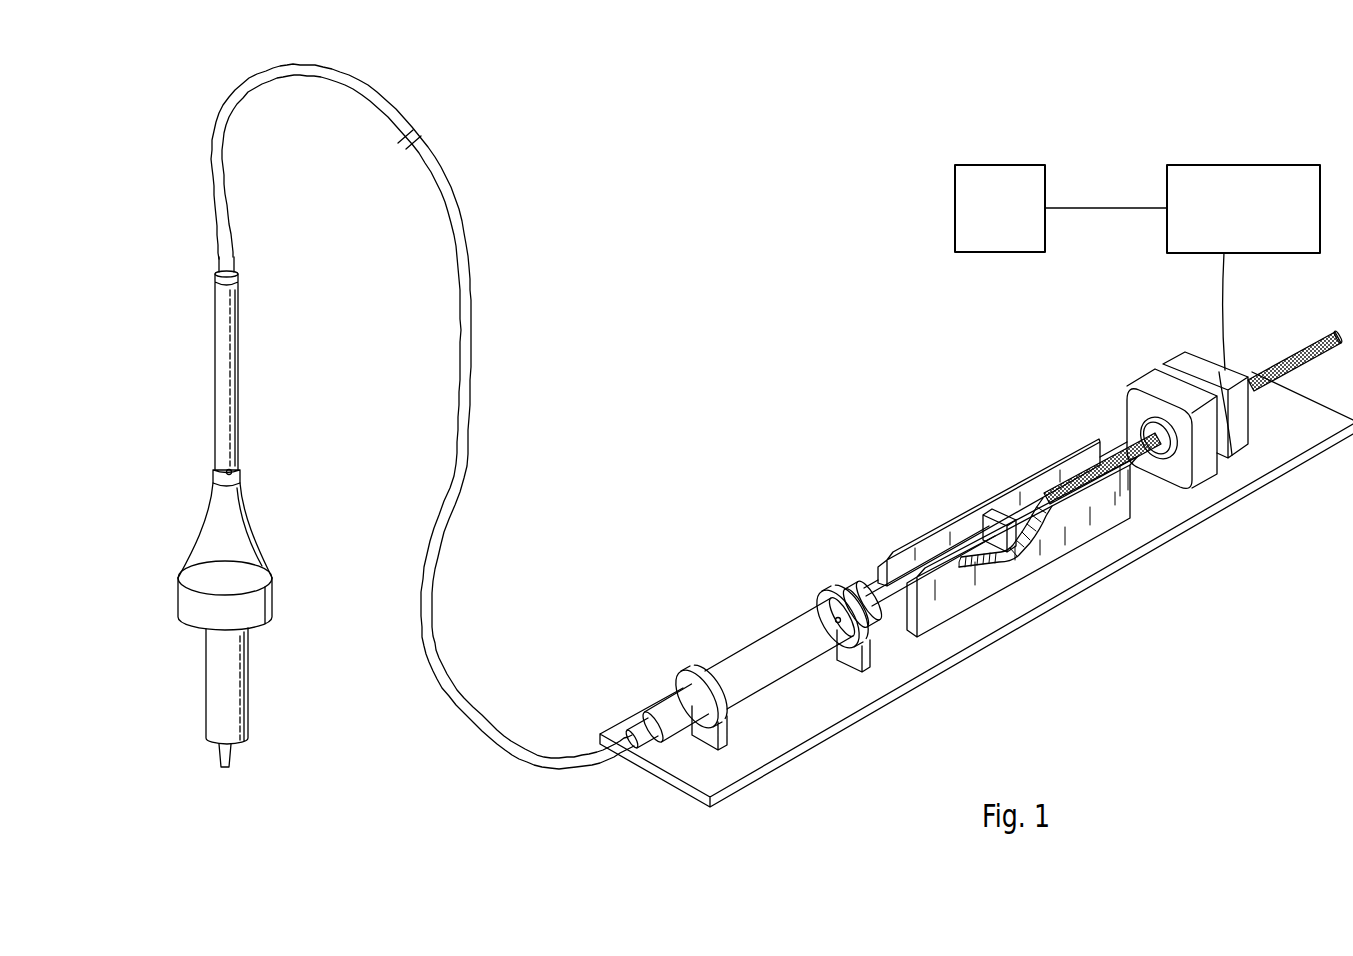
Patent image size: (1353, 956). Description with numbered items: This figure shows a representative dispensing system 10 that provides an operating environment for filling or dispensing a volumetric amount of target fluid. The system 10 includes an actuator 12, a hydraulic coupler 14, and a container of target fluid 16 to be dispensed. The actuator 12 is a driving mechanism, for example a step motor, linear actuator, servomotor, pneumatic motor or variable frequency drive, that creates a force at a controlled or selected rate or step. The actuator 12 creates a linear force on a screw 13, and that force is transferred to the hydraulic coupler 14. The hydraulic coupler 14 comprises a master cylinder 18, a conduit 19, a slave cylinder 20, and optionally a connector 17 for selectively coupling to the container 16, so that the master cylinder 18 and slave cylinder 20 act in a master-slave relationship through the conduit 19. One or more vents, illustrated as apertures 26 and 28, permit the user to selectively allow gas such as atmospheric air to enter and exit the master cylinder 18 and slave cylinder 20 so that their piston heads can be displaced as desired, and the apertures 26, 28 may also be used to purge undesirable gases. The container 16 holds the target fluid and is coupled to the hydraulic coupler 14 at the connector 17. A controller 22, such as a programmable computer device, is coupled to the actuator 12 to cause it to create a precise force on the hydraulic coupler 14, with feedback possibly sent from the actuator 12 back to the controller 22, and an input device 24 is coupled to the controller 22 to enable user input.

The dispensing system 10 is at (601, 134).
The actuator 12 is at (1232, 455).
The screw 13 is at (1138, 465).
The hydraulic coupler 14 is at (457, 478).
The container of target fluid 16 is at (212, 678).
The connector 17 is at (179, 535).
The master cylinder 18 is at (792, 655).
The conduit 19 is at (458, 222).
The slave cylinder 20 is at (240, 332).
The controller 22 is at (1233, 241).
The input device 24 is at (990, 243).
The aperture 26 is at (836, 616).
The aperture 28 is at (236, 470).